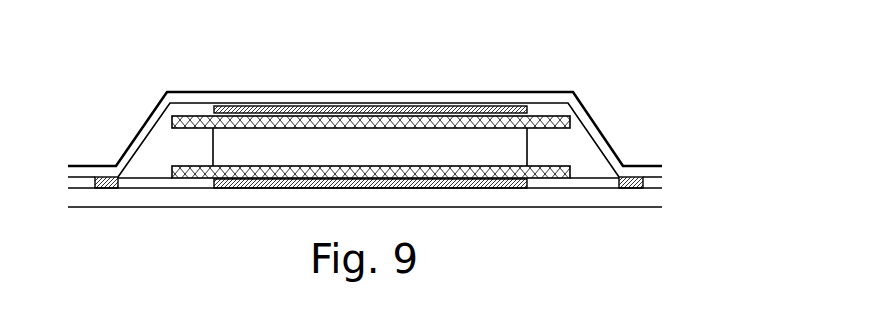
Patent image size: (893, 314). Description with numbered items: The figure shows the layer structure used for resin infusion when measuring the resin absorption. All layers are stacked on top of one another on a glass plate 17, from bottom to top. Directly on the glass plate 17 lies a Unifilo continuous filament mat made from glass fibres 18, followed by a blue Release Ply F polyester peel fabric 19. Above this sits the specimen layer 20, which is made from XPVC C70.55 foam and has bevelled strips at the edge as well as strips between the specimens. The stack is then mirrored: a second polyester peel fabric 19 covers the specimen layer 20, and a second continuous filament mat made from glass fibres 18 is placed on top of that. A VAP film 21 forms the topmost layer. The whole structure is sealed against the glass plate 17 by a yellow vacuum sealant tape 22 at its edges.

The glass plate 17 is at (558, 197).
The continuous filament mat made from glass fibres 18 is at (412, 110).
The polyester peel fabric 19 is at (440, 120).
The specimen layer 20 is at (463, 143).
The VAP film 21 is at (377, 100).
The vacuum sealant tape 22 is at (110, 183).